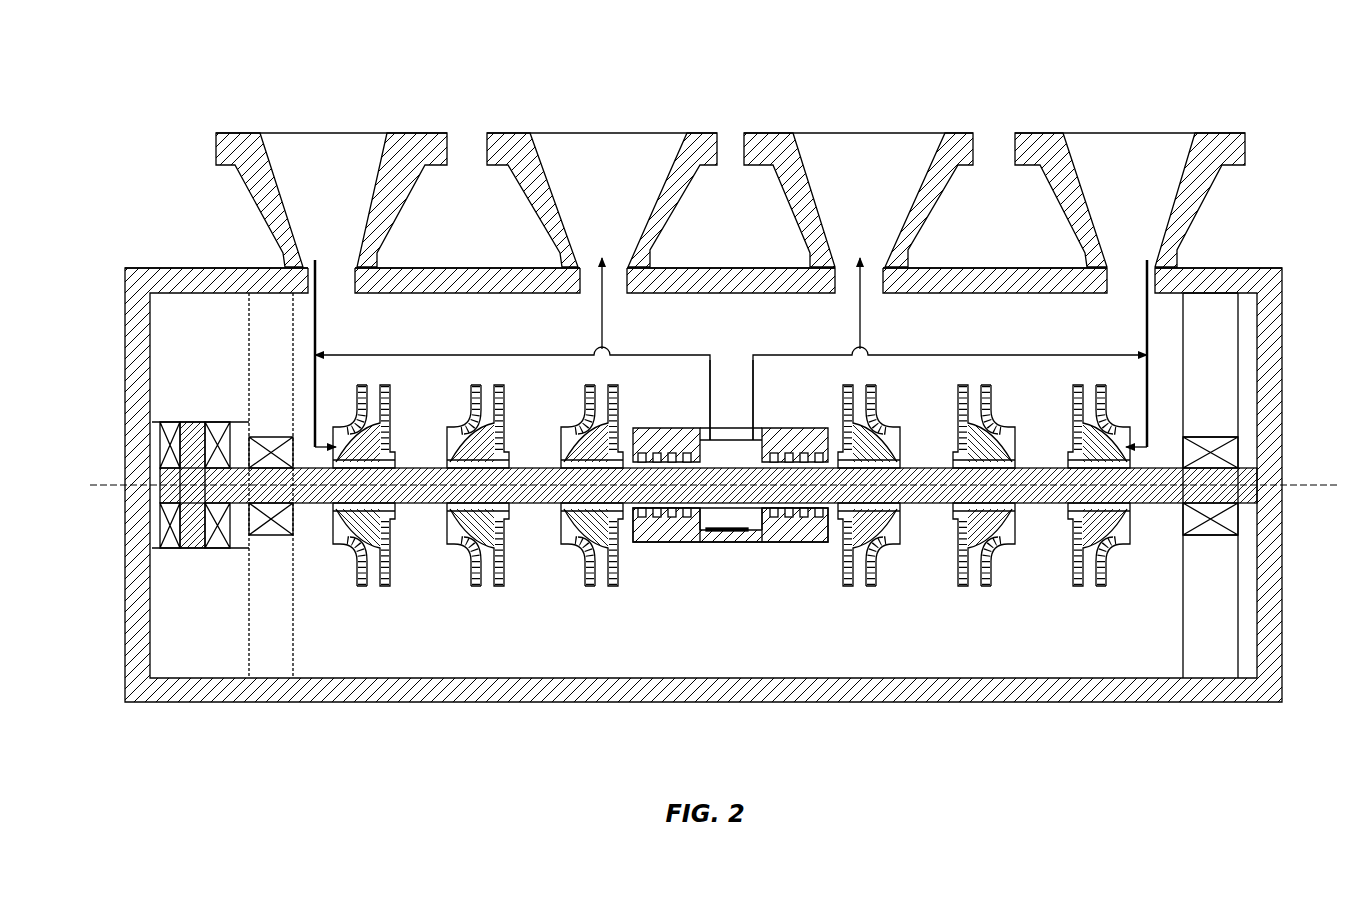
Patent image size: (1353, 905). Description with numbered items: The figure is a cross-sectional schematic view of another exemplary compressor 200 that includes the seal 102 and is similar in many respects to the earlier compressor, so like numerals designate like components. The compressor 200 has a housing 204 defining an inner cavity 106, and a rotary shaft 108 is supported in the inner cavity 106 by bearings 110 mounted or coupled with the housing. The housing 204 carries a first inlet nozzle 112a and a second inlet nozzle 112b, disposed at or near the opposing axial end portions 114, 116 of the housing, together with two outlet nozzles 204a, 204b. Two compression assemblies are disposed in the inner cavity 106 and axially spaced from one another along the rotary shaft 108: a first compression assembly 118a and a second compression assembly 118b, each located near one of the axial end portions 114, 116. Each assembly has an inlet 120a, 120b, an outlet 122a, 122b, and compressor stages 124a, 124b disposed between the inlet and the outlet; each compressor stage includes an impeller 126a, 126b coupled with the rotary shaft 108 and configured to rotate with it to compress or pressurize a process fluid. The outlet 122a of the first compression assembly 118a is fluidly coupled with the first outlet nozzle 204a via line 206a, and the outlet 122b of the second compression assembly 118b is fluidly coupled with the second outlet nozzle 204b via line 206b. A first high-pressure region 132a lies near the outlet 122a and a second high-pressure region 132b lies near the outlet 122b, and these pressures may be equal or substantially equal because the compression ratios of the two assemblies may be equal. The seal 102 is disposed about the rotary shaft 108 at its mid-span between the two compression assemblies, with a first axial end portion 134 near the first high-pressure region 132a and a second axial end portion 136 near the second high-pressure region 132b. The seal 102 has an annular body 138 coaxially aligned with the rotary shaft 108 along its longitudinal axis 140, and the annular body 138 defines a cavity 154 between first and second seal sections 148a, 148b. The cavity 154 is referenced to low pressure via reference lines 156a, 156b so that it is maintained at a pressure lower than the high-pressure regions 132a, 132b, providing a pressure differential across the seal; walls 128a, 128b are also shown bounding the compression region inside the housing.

The compressor 200 is at (228, 58).
The seal 102 is at (692, 578).
The inner cavity 106 is at (768, 655).
The rotary shaft 108 is at (1255, 478).
The bearings 110 is at (270, 440).
The first inlet nozzle 112a is at (216, 150).
The second inlet nozzle 112b is at (1245, 150).
The axial end portion 114 is at (243, 703).
The axial end portion 116 is at (1212, 703).
The first compression assembly 118a is at (325, 655).
The second compression assembly 118b is at (1103, 655).
The inlet 120a is at (330, 523).
The inlet 120b is at (1135, 523).
The outlet 122a is at (603, 591).
The outlet 122b is at (861, 591).
The compressor stages 124a is at (464, 563).
The compressor stages 124b is at (881, 562).
The impeller 126a is at (390, 435).
The impeller 126b is at (883, 420).
The first partition wall 128a is at (318, 333).
The second partition wall 128b is at (1145, 333).
The first high-pressure region 132a is at (655, 385).
The second high-pressure region 132b is at (760, 385).
The first axial end portion 134 is at (690, 425).
The second axial end portion 136 is at (770, 425).
The annular body 138 is at (743, 542).
The longitudinal axis 140 is at (1305, 488).
The first seal section 148a is at (663, 533).
The second seal section 148b is at (818, 533).
The cavity 154 is at (748, 526).
The reference line 156a is at (440, 352).
The reference line 156b is at (978, 352).
The housing 204 is at (447, 703).
The first outlet nozzle 204a is at (487, 150).
The second outlet nozzle 204b is at (744, 150).
The line 206a is at (600, 333).
The line 206b is at (862, 333).